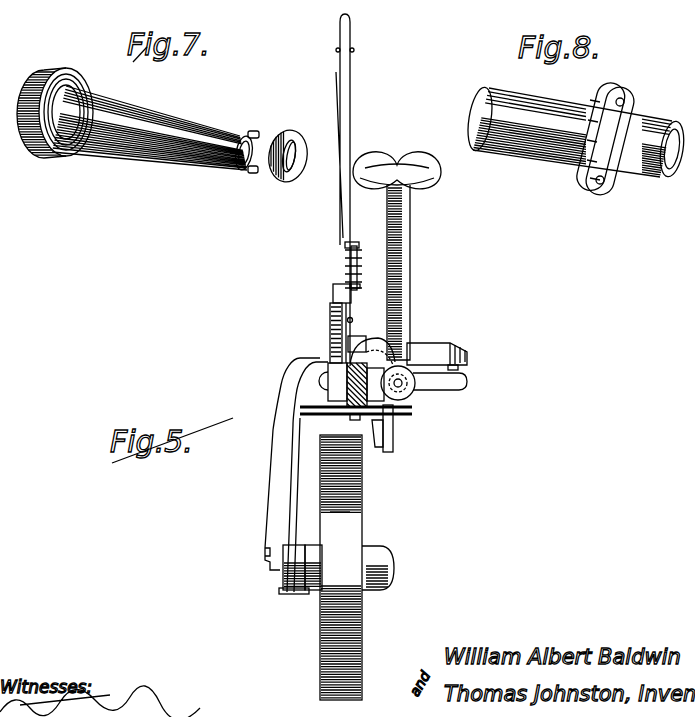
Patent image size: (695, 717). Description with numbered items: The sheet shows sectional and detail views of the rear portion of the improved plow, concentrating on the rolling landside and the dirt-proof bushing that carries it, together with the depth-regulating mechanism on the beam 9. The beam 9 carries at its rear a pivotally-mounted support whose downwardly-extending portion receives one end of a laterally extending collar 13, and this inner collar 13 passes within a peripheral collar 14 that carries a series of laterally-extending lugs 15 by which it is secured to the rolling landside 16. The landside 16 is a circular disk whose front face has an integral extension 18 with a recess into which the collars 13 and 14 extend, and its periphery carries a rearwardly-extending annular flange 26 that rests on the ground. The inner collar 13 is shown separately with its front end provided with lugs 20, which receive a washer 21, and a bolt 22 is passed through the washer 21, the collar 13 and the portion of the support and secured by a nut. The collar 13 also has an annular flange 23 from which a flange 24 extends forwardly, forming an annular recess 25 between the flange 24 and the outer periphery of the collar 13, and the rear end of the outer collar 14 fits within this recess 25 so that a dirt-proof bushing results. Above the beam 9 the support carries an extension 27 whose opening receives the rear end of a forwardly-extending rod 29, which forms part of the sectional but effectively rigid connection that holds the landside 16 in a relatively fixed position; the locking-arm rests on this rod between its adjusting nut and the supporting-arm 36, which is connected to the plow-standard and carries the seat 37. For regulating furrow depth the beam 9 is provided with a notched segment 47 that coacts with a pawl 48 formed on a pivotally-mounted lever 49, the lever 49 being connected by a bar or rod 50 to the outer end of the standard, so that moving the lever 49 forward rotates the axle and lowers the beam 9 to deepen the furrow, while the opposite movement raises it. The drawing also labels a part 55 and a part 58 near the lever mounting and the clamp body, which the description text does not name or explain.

In FIG. 5, the beam 9 is at (385, 408).
In FIG. 7, the collar 13 is at (124, 155).
In FIG. 8, the peripheral collar 14 is at (531, 163).
In FIG. 5, the peripheral collar 14 is at (316, 590).
In FIG. 8, the lugs 15 is at (636, 89).
In FIG. 5, the rolling landside 16 is at (361, 567).
In FIG. 5, the integral extension 18 is at (393, 558).
In FIG. 7, the lugs 20 is at (263, 133).
In FIG. 7, the washer 21 is at (295, 183).
In FIG. 5, the bolt 22 is at (263, 564).
In FIG. 7, the annular flange 23 is at (55, 99).
In FIG. 7, the flange 24 is at (98, 83).
In FIG. 5, the flange 24 is at (290, 592).
In FIG. 7, the annular recess 25 is at (61, 160).
In FIG. 5, the annular flange 26 is at (352, 327).
In FIG. 5, the extension 27 is at (467, 358).
In FIG. 5, the rod 29 is at (455, 340).
In FIG. 5, the supporting-arm 36 is at (413, 240).
In FIG. 5, the seat 37 is at (397, 151).
In FIG. 5, the notched segment 47 is at (330, 323).
In FIG. 5, the pawl 48 is at (333, 292).
In FIG. 5, the lever 49 is at (338, 232).
In FIG. 5, the bar or rod 50 is at (375, 322).
In FIG. 5, the lever 55 is at (405, 330).
In FIG. 5, the clamp body 58 is at (348, 354).